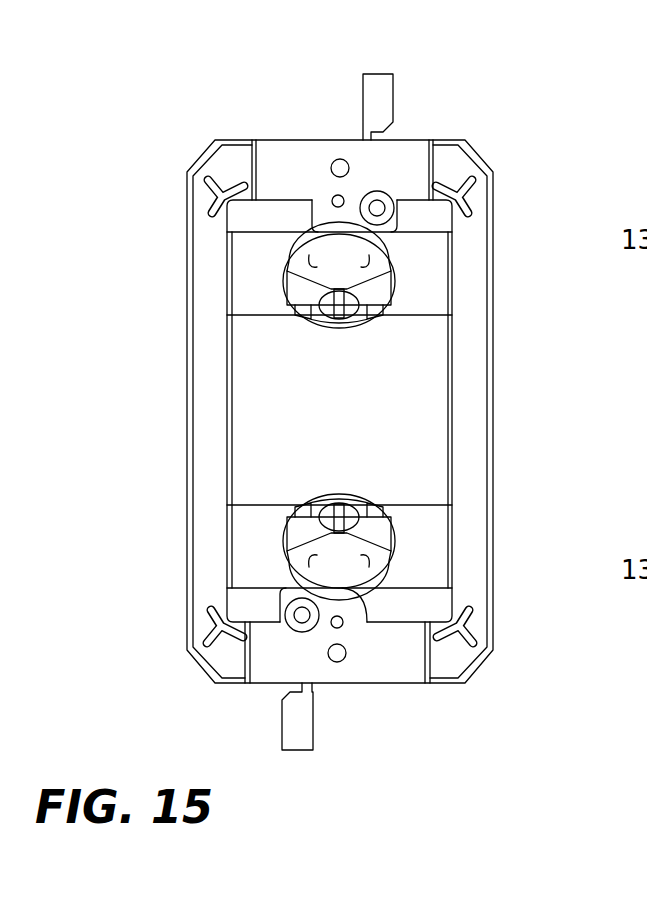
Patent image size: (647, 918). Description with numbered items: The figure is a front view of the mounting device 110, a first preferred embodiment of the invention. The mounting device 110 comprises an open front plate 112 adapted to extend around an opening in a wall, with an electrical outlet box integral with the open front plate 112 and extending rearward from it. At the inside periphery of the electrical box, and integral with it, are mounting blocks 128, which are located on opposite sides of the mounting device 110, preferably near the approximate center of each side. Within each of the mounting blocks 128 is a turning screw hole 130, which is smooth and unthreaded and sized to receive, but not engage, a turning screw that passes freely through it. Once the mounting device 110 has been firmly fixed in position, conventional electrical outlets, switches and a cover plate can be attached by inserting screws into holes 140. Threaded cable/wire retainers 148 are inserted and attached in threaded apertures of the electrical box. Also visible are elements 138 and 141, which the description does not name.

The mounting device 110 is at (378, 440).
The open front plate 112 is at (473, 422).
The mounting block 128 is at (350, 222).
The turning screw hole 130 is at (378, 207).
The tab 138 is at (393, 74).
The hole 140 is at (341, 159).
The aperture 141 is at (333, 196).
The threaded cable/wire retainer 148 is at (302, 291).